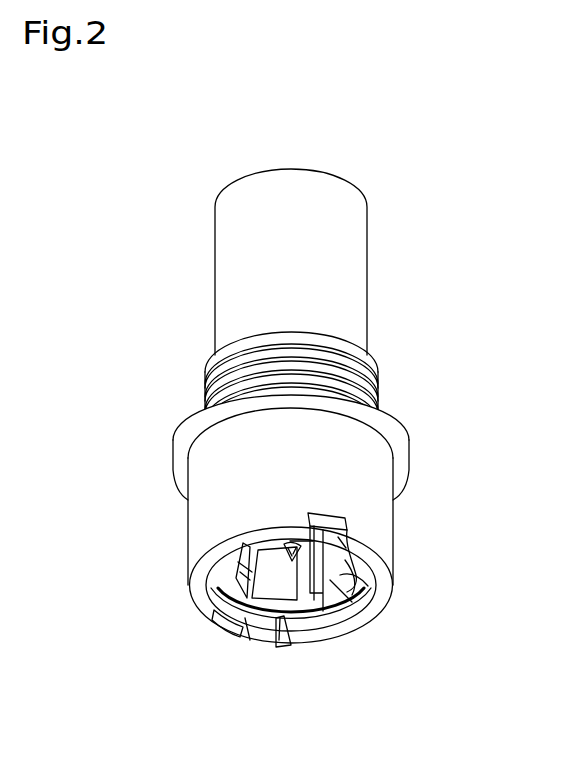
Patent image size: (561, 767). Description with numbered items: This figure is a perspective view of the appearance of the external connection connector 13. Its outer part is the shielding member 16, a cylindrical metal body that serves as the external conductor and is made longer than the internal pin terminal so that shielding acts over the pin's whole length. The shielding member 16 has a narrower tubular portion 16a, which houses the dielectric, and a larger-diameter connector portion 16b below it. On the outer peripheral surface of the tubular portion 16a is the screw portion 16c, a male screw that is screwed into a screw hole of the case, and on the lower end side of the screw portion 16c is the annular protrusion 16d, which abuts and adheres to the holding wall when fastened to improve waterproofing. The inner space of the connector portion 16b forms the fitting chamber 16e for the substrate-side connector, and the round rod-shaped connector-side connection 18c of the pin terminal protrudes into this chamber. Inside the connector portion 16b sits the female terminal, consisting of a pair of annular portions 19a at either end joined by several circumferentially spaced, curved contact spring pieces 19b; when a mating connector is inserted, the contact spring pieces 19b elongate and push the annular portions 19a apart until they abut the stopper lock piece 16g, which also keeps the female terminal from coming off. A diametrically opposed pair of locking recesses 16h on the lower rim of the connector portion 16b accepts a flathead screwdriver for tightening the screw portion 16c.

The external connection connector 13 is at (388, 161).
The shielding member 16 is at (367, 260).
The tubular portion 16a is at (222, 238).
The connector portion 16b is at (197, 505).
The screw portion 16c is at (203, 373).
The annular protrusion 16d is at (175, 425).
The fitting chamber 16e is at (358, 618).
The stopper lock piece 16g is at (293, 648).
The locking recesses 16h is at (348, 533).
The connector-side connection 18c is at (283, 548).
The annular portions 19a is at (318, 513).
The contact spring pieces 19b is at (247, 541).